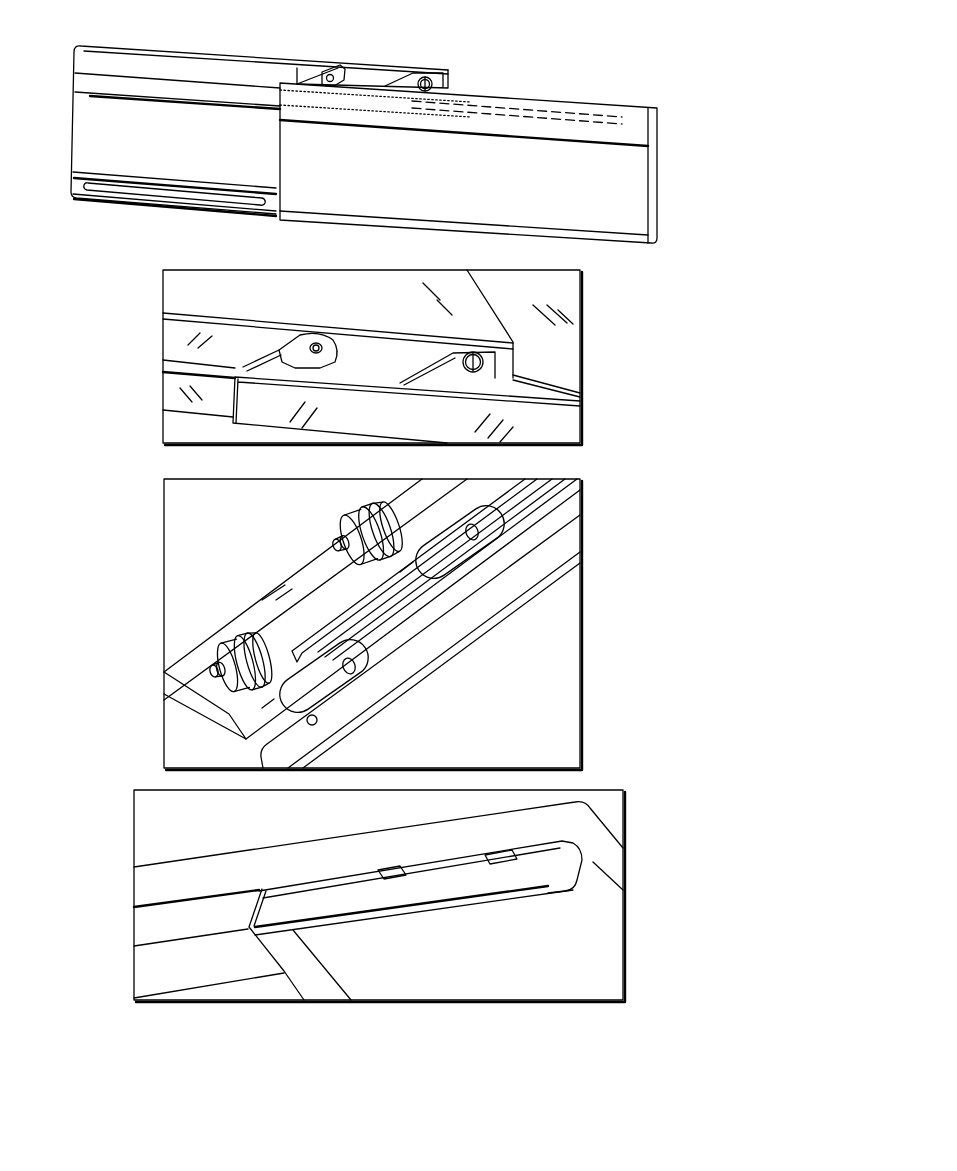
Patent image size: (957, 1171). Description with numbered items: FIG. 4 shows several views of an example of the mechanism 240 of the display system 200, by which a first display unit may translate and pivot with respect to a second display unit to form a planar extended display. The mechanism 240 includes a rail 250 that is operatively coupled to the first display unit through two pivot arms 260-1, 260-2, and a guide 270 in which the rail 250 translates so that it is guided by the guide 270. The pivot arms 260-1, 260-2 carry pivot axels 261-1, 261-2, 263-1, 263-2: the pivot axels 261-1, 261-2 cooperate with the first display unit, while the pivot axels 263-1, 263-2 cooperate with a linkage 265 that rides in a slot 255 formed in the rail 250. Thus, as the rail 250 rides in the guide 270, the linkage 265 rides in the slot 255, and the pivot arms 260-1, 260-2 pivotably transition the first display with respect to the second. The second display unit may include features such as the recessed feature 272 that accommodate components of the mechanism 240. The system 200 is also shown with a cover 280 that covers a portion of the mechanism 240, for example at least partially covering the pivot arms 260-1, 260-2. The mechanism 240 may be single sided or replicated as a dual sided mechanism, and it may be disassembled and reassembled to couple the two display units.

The system 200 is at (98, 30).
The mechanism 240 is at (483, 54).
The rail 250 is at (186, 94).
The slot 255 is at (412, 625).
The pivot arm 260-1 is at (309, 80).
The pivot arm 260-2 is at (404, 90).
The pivot axel 261-1 is at (327, 542).
The pivot axel 261-2 is at (205, 665).
The pivot axel 263-1 is at (478, 535).
The pivot axel 263-2 is at (352, 668).
The linkage 265 is at (432, 590).
The guide 270 is at (467, 98).
The recessed feature 272 is at (563, 113).
The cover 280 is at (284, 858).